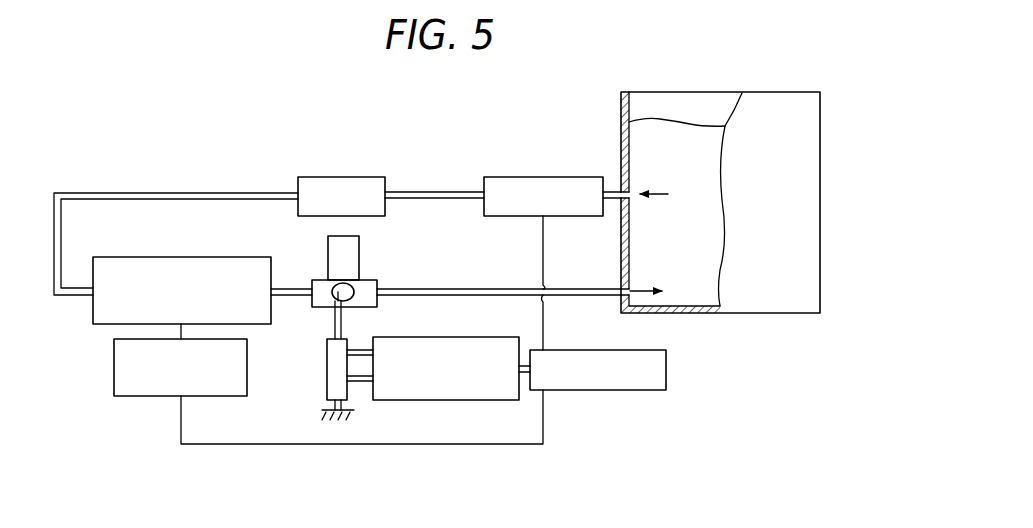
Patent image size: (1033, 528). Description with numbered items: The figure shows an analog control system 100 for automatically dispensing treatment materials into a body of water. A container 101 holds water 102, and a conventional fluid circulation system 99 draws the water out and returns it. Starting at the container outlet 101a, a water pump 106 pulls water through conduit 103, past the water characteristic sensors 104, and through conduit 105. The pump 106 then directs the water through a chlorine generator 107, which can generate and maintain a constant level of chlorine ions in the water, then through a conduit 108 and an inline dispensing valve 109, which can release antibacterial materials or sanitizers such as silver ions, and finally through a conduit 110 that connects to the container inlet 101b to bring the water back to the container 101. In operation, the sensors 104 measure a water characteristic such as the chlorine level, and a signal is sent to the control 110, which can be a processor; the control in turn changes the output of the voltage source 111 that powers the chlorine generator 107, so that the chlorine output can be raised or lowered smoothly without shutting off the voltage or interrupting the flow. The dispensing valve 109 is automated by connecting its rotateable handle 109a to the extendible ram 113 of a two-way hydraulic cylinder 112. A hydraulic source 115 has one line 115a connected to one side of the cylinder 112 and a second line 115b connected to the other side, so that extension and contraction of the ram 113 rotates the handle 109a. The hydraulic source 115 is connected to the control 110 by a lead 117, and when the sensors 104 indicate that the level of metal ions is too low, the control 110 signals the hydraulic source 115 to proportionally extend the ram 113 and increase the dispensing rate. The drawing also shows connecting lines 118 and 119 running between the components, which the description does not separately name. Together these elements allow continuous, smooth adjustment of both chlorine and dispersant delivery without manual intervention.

The fluid circulation system 99 is at (77, 188).
The analog control system 100 is at (280, 91).
The container 101 is at (820, 120).
The container outlet 101a is at (629, 188).
The container inlet 101b is at (620, 312).
The water 102 is at (650, 120).
The conduit 103 is at (617, 190).
The water characteristic sensors 104 is at (512, 177).
The conduit 105 is at (417, 190).
The water pump 106 is at (323, 176).
The chlorine generator 107 is at (157, 257).
The conduit 108 is at (294, 281).
The dispensing valve 109 is at (362, 254).
The rotateable handle 109a is at (357, 290).
The conduit / control 110 is at (467, 288).
The voltage source 111 is at (116, 395).
The two-way hydraulic cylinder 112 is at (327, 367).
The extendible ram 113 is at (334, 322).
The hydraulic source 115 is at (462, 401).
The line 115a is at (360, 347).
The second line 115b is at (361, 393).
The lead 117 is at (524, 360).
The sensor wire 118 is at (543, 316).
The power wire 119 is at (498, 445).